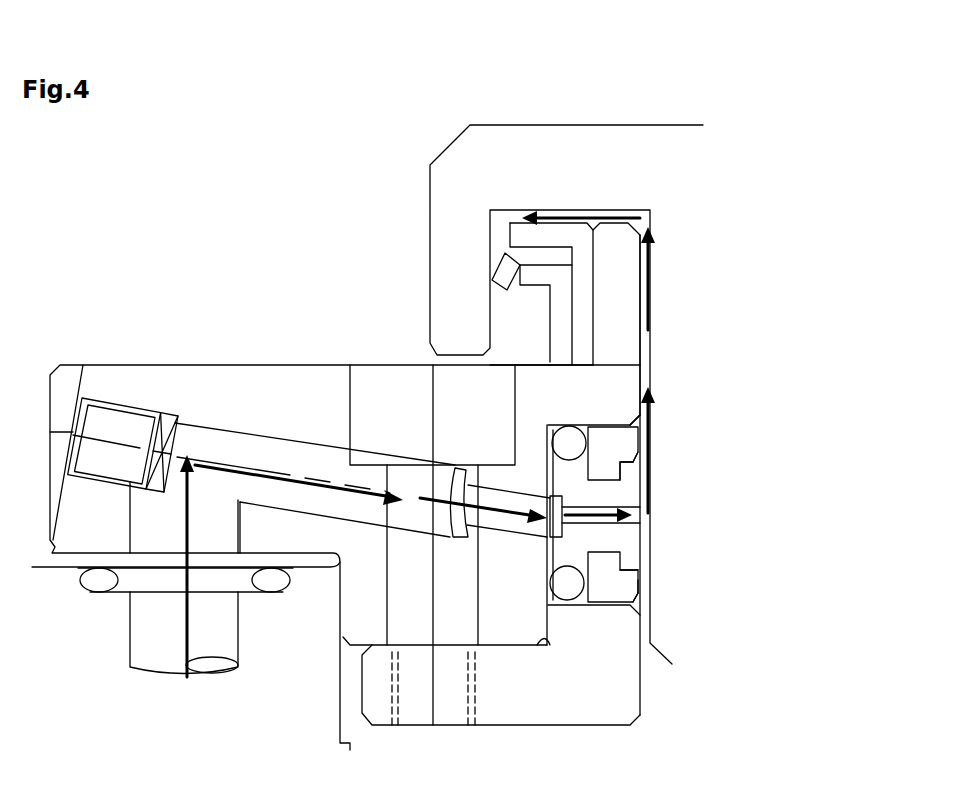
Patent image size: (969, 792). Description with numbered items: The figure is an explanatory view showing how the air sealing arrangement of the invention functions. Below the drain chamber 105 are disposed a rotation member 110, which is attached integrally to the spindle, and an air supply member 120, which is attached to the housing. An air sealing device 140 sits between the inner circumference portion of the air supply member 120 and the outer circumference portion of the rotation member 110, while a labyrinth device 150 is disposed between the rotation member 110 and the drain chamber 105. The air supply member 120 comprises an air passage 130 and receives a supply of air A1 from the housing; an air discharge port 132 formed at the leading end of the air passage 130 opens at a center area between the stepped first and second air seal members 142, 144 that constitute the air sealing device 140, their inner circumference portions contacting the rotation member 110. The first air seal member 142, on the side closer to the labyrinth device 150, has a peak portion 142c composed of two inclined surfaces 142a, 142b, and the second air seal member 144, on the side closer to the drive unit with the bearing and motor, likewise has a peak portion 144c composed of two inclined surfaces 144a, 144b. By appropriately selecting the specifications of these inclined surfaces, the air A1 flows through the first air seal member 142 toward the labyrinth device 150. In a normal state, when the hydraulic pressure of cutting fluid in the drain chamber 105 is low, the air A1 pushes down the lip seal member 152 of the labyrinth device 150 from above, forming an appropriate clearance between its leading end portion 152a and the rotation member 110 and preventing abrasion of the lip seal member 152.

The drain chamber 105 is at (260, 199).
The rotation member 110 is at (638, 145).
The air supply member 120 is at (358, 620).
The air passage 130 is at (147, 523).
The air discharge port 132 is at (632, 522).
The air sealing device 140 is at (655, 513).
The first air seal member 142 is at (620, 435).
The inclined surface 142a is at (650, 450).
The inclined surface 142b is at (636, 422).
The peak portion 142c is at (652, 443).
The second air seal member 144 is at (622, 583).
The inclined surface 144a is at (647, 573).
The inclined surface 144b is at (648, 593).
The peak portion 144c is at (650, 587).
The labyrinth device 150 is at (552, 228).
The lip seal member 152 is at (513, 268).
The leading end portion 152a is at (510, 268).
The air A1 is at (247, 473).